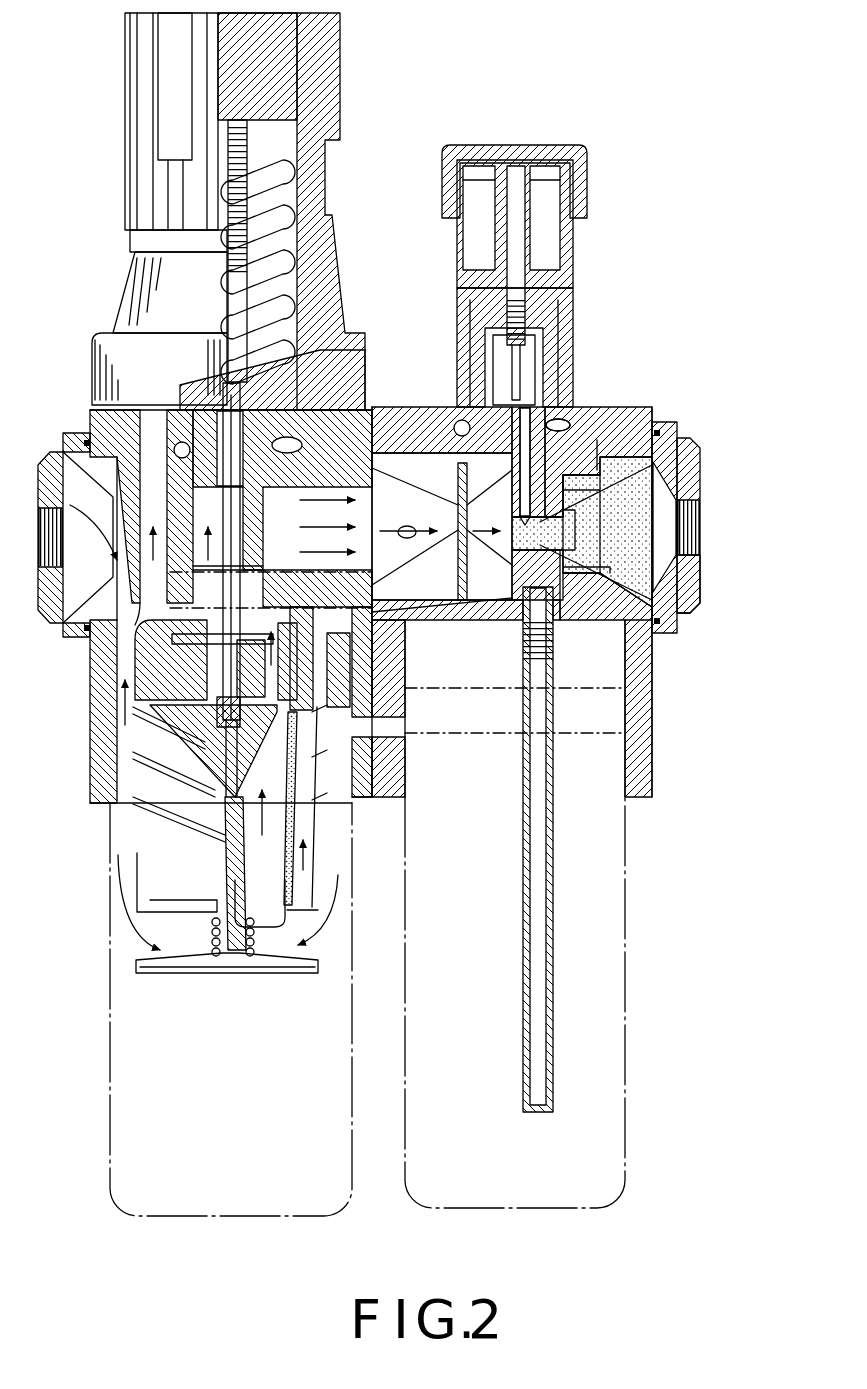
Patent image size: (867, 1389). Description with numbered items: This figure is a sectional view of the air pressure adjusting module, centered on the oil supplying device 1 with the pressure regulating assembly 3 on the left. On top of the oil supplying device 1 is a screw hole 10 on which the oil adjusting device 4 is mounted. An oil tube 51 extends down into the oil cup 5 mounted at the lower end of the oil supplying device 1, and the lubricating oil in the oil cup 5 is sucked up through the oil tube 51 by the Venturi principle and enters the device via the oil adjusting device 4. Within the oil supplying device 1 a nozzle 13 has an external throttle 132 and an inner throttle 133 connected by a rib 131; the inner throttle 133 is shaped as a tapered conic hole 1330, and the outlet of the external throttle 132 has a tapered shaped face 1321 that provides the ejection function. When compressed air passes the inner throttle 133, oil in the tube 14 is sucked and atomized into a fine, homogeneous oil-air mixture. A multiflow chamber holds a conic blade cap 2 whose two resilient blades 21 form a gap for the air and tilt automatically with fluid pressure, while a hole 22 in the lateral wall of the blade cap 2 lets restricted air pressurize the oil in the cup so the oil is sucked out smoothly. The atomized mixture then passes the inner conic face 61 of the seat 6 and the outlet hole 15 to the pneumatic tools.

The oil supplying device 1 is at (668, 395).
The blade cap 2 is at (372, 470).
The pressure regulating knob assembly 3 is at (97, 277).
The oil adjusting device 4 is at (585, 268).
The oil cup 5 is at (620, 993).
The seat 6 is at (673, 627).
The screw hole 10 is at (545, 452).
The nozzle 13 is at (577, 572).
The tube 14 is at (597, 460).
The outlet hole 15 is at (703, 548).
The blades 21 is at (428, 500).
The hole 22 is at (412, 542).
The oil tube 51 is at (553, 930).
The inner conic face 61 is at (703, 590).
The rib 131 is at (512, 572).
The external throttle 132 is at (655, 412).
The inner throttle 133 is at (655, 505).
The tapered shaped face 1321 is at (632, 622).
The tapered conic hole 1330 is at (512, 550).